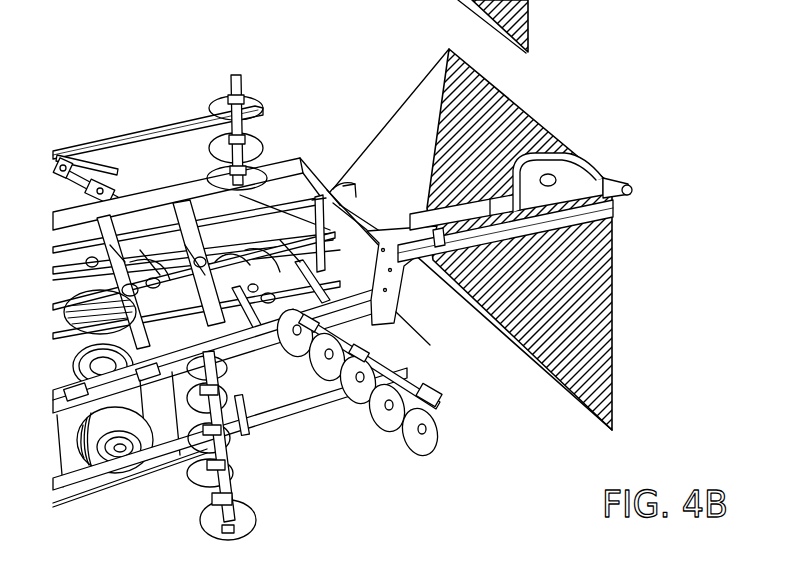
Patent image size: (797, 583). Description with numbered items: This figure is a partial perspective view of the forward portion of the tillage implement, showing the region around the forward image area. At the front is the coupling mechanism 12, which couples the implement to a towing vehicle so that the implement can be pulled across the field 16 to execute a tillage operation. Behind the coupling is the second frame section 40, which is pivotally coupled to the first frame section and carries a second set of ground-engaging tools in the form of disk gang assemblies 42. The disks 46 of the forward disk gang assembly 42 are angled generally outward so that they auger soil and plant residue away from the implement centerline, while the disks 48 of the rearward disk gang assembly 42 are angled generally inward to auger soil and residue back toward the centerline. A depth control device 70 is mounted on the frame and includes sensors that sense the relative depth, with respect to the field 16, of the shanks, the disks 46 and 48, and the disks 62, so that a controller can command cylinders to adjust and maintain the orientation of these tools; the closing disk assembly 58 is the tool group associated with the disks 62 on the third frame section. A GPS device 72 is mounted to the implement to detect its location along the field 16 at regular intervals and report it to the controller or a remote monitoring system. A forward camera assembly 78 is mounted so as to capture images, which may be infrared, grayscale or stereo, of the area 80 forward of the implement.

The coupling mechanism 12 is at (496, 232).
The field 16 is at (704, 391).
The second frame section 40 is at (212, 213).
The disk gang assembly 42 is at (393, 434).
The disks 46 is at (388, 422).
The disks 48 is at (253, 462).
The closing disk assembly 58 is at (613, 0).
The disks 62 is at (733, 6).
The depth control device 70 is at (302, 181).
The GPS device 72 is at (424, 268).
The forward camera assembly 78 is at (315, 186).
The area forward of the implement 80 is at (569, 138).